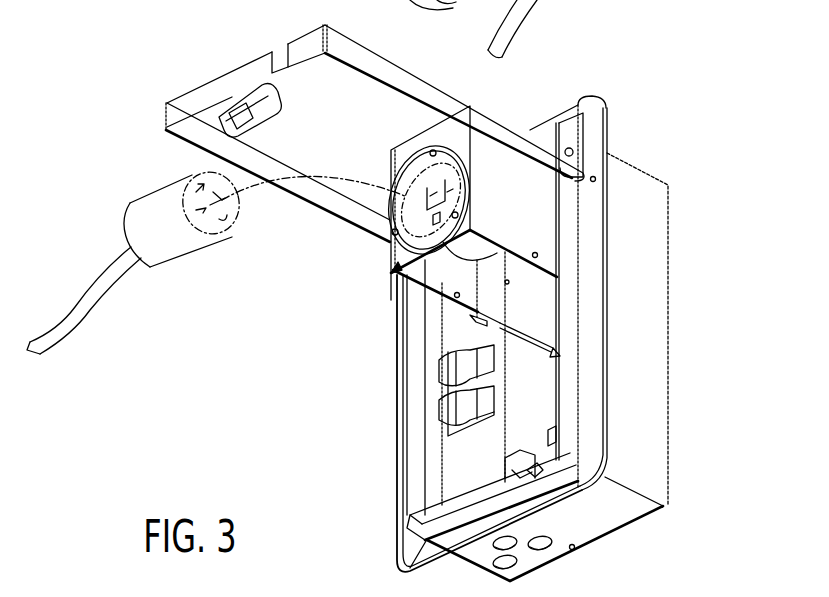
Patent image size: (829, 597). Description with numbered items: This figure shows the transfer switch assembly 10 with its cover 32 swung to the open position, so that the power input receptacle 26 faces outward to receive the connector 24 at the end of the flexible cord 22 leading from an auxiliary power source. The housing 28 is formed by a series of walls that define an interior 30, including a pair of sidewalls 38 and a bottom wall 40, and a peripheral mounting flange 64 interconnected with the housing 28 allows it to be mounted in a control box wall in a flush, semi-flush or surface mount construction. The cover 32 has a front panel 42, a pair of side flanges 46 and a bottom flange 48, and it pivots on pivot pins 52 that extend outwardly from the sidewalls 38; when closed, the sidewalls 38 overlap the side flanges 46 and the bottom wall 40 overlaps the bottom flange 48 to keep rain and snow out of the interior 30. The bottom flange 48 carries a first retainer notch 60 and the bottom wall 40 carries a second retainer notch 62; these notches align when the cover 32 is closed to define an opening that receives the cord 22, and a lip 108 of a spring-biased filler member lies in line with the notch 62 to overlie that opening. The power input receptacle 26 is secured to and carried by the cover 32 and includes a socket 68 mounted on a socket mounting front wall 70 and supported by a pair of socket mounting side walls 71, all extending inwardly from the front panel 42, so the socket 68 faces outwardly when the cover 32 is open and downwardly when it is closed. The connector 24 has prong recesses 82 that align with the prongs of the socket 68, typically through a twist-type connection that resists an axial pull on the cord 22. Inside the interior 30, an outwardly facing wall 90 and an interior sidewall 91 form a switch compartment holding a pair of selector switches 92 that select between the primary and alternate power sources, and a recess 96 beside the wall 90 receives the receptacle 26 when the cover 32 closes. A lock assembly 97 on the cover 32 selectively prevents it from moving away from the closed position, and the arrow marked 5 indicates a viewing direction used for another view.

The power cord assembly 5 is at (528, 47).
The transfer switch assembly 10 is at (667, 97).
The cord 22 is at (81, 293).
The connector 24 is at (203, 252).
The power input receptacle 26 is at (370, 265).
The housing 28 is at (642, 166).
The interior 30 is at (428, 490).
The cover 32 is at (194, 85).
The sidewalls 38 is at (648, 387).
The bottom wall 40 is at (622, 517).
The front panel 42 is at (334, 76).
The side flanges 46 is at (338, 208).
The bottom flange 48 is at (235, 78).
The pivot pins 52 is at (574, 152).
The first retainer notch 60 is at (290, 56).
The second retainer notch 62 is at (532, 465).
The peripheral mounting flange 64 is at (609, 288).
The socket 68 is at (398, 274).
The socket mounting front wall 70 is at (450, 132).
The socket mounting side walls 71 is at (503, 153).
The prong recesses 82 is at (195, 211).
The outwardly facing wall 90 is at (452, 465).
The interior sidewall 91 is at (548, 367).
The selector switches 92 is at (436, 372).
The recess 96 is at (547, 425).
The lock assembly 97 is at (246, 101).
The lip 108 is at (513, 460).